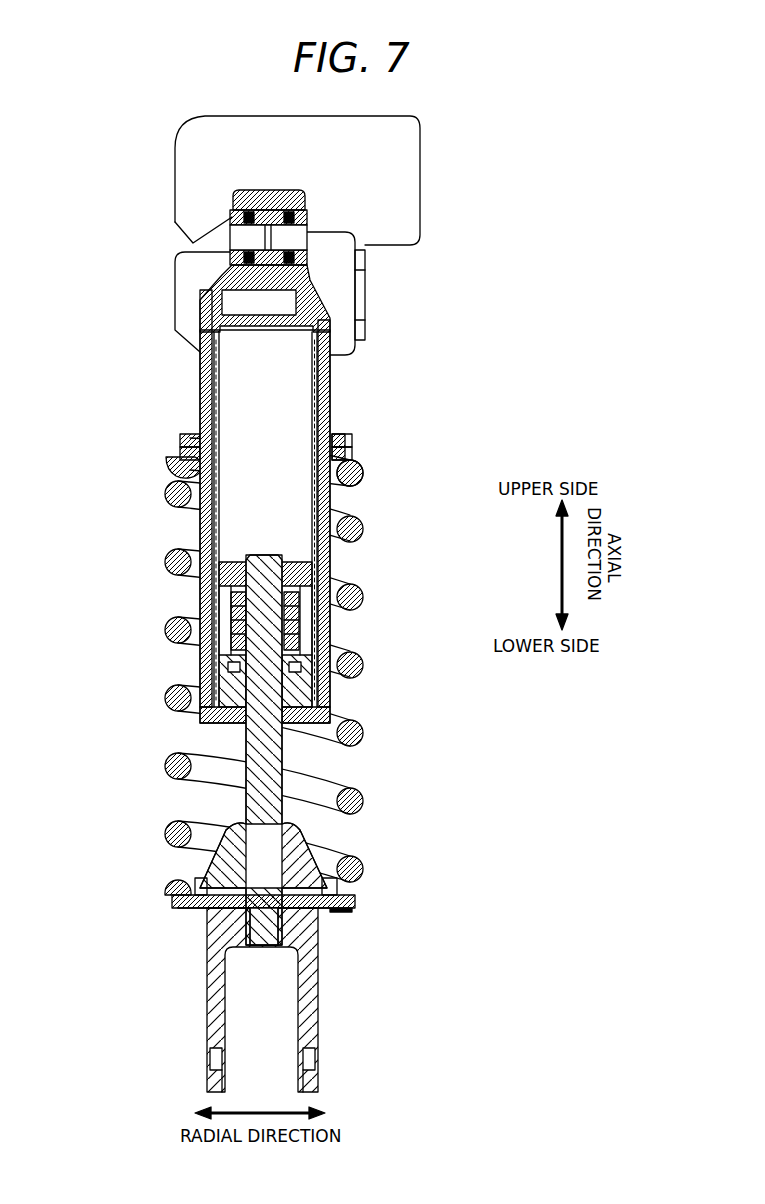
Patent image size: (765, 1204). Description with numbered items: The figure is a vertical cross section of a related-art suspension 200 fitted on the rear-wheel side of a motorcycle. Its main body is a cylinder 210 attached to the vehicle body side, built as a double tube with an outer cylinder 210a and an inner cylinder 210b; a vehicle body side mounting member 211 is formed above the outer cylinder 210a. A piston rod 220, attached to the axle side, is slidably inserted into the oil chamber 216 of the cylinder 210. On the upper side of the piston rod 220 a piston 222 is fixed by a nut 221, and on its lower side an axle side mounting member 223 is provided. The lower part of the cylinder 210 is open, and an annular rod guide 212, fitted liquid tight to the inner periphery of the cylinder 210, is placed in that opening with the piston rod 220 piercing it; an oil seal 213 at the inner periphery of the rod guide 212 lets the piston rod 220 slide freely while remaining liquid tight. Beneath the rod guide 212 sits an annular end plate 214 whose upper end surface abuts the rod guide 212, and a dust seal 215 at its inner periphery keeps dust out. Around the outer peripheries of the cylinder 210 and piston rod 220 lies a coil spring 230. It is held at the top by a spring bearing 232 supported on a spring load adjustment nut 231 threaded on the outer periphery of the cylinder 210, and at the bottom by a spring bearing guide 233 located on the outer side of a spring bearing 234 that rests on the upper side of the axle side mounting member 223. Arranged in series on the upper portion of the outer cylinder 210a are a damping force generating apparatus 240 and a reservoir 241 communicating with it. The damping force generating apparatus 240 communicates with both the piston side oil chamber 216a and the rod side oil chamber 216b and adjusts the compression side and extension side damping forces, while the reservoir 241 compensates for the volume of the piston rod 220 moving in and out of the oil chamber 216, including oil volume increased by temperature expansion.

The suspension 200 is at (463, 262).
The cylinder 210 is at (105, 368).
The outer cylinder 210a is at (200, 374).
The inner cylinder 210b is at (215, 408).
The vehicle body side mounting member 211 is at (232, 219).
The rod guide 212 is at (220, 676).
The oil seal 213 is at (318, 690).
The end plate 214 is at (223, 726).
The dust seal 215 is at (294, 728).
The oil chamber 216 is at (428, 497).
The piston side oil chamber 216a is at (288, 503).
The rod side oil chamber 216b is at (305, 618).
The piston rod 220 is at (256, 806).
The nut 221 is at (232, 565).
The piston 222 is at (222, 597).
The axle side mounting member 223 is at (212, 1000).
The coil spring 230 is at (364, 473).
The spring load adjustment nut 231 is at (352, 440).
The spring bearing 232 is at (352, 453).
The spring bearing guide 233 is at (350, 904).
The spring bearing 234 is at (337, 910).
The damping force generating apparatus 240 is at (197, 283).
The reservoir 241 is at (400, 177).